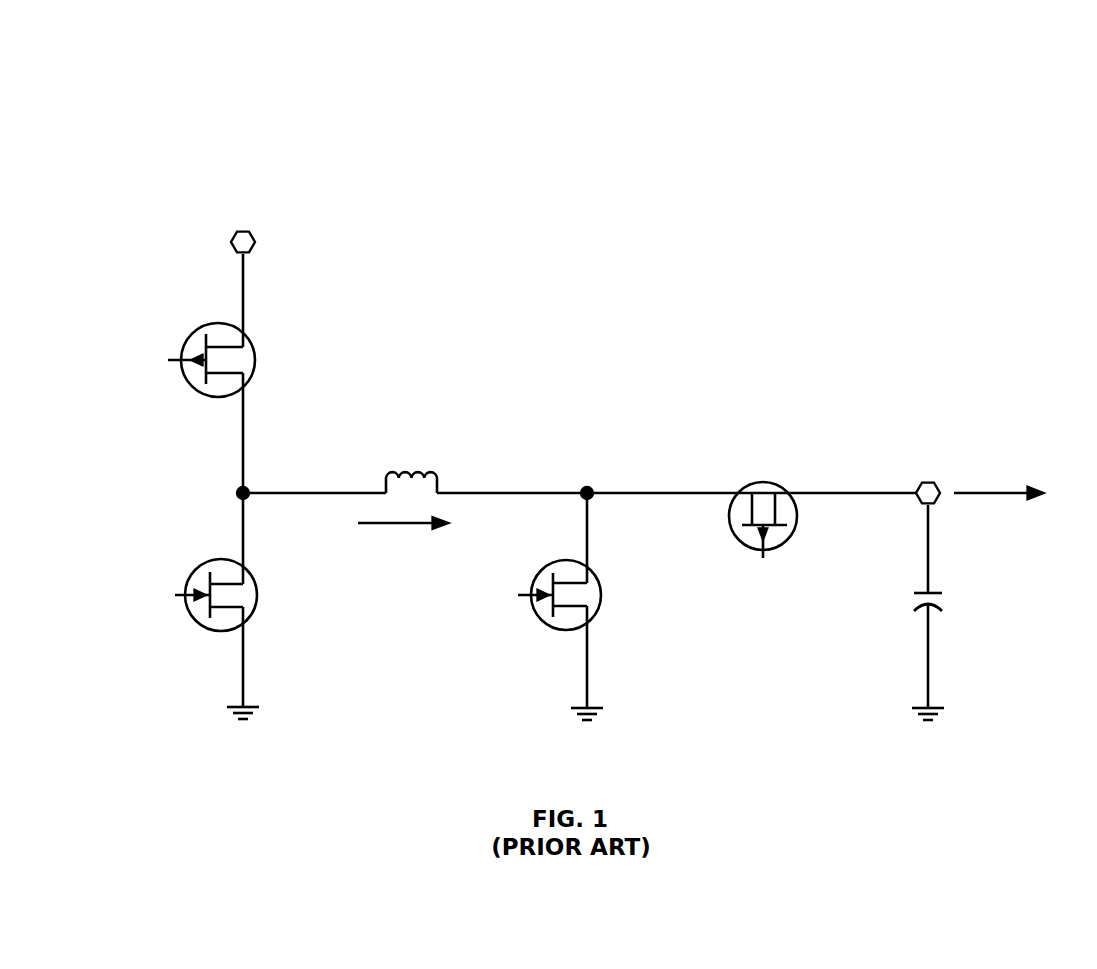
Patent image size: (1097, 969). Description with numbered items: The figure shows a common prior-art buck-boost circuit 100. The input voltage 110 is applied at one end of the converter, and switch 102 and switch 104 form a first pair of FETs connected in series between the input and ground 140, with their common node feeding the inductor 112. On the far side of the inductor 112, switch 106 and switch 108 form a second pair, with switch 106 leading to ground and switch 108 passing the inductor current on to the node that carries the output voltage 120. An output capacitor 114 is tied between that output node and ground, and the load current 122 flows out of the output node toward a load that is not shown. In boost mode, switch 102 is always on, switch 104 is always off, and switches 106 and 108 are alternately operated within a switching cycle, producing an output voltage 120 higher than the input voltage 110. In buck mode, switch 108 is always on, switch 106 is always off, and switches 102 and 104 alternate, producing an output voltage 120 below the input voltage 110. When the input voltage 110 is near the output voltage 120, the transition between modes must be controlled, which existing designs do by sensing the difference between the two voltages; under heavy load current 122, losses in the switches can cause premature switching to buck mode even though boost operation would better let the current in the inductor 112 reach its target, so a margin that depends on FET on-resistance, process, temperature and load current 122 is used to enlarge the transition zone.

The buck-boost circuit 100 is at (985, 121).
The switch 102 is at (192, 334).
The switch 104 is at (196, 570).
The switch 106 is at (598, 582).
The switch 108 is at (764, 482).
The input voltage 110 is at (244, 229).
The inductor 112 is at (418, 467).
The output capacitor C 114 is at (935, 588).
The output voltage 120 is at (932, 450).
The load current 122 is at (992, 490).
The ground 140 is at (253, 703).